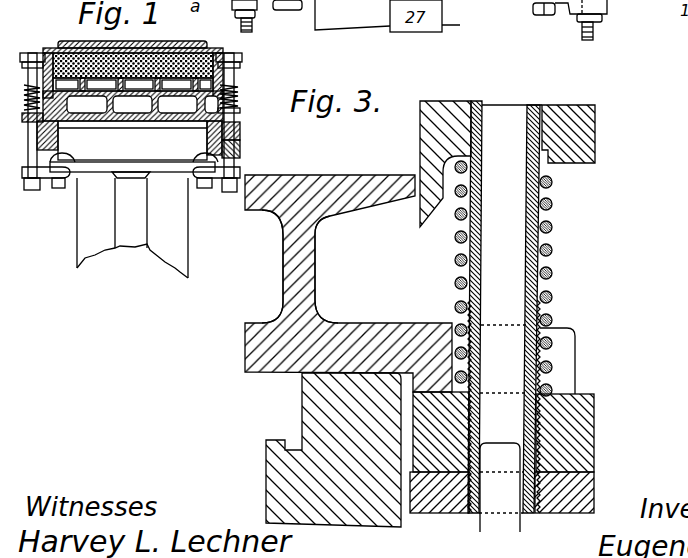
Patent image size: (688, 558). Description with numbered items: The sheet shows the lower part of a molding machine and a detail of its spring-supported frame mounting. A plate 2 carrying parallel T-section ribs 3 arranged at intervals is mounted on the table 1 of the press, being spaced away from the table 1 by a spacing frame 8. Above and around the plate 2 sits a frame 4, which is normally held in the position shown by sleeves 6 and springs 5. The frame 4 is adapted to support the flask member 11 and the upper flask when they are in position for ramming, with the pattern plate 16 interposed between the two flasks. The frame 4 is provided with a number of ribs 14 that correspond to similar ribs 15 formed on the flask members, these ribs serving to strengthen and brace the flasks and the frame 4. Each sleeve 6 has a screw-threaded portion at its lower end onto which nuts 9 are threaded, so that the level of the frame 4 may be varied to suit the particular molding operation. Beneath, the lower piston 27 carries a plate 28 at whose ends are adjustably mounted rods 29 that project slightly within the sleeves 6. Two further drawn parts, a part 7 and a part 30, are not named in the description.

In FIG. 3, the table 1 is at (303, 472).
In FIG. 1A, the plate 2 is at (175, 128).
In FIG. 3, the plate 2 is at (373, 338).
In FIG. 1A, the T-section ribs 3 is at (60, 141).
In FIG. 3, the T-section ribs 3 is at (297, 263).
In FIG. 1A, the frame 4 is at (133, 84).
In FIG. 3, the frame 4 is at (432, 130).
In FIG. 1A, the springs 5 is at (238, 100).
In FIG. 3, the springs 5 is at (549, 252).
In FIG. 1A, the sleeves 6 is at (240, 111).
In FIG. 3, the sleeves 6 is at (476, 240).
In FIG. 3, the spring seat 7 is at (550, 165).
In FIG. 1A, the spacing frame 8 is at (240, 131).
In FIG. 3, the spacing frame 8 is at (577, 435).
In FIG. 1A, the nuts 9 is at (240, 147).
In FIG. 3, the nuts 9 is at (573, 488).
In FIG. 1A, the flask member 11 is at (223, 56).
In FIG. 1A, the ribs 14 is at (149, 84).
In FIG. 1A, the ribs 15 is at (133, 75).
In FIG. 1A, the pattern plate 16 is at (205, 50).
In FIG. 1A, the lower piston 27 is at (143, 200).
In FIG. 1A, the plate 28 is at (128, 172).
In FIG. 1A, the rods 29 is at (28, 52).
In FIG. 3, the rods 29 is at (488, 443).
In FIG. 1A, the washer 30 is at (37, 103).